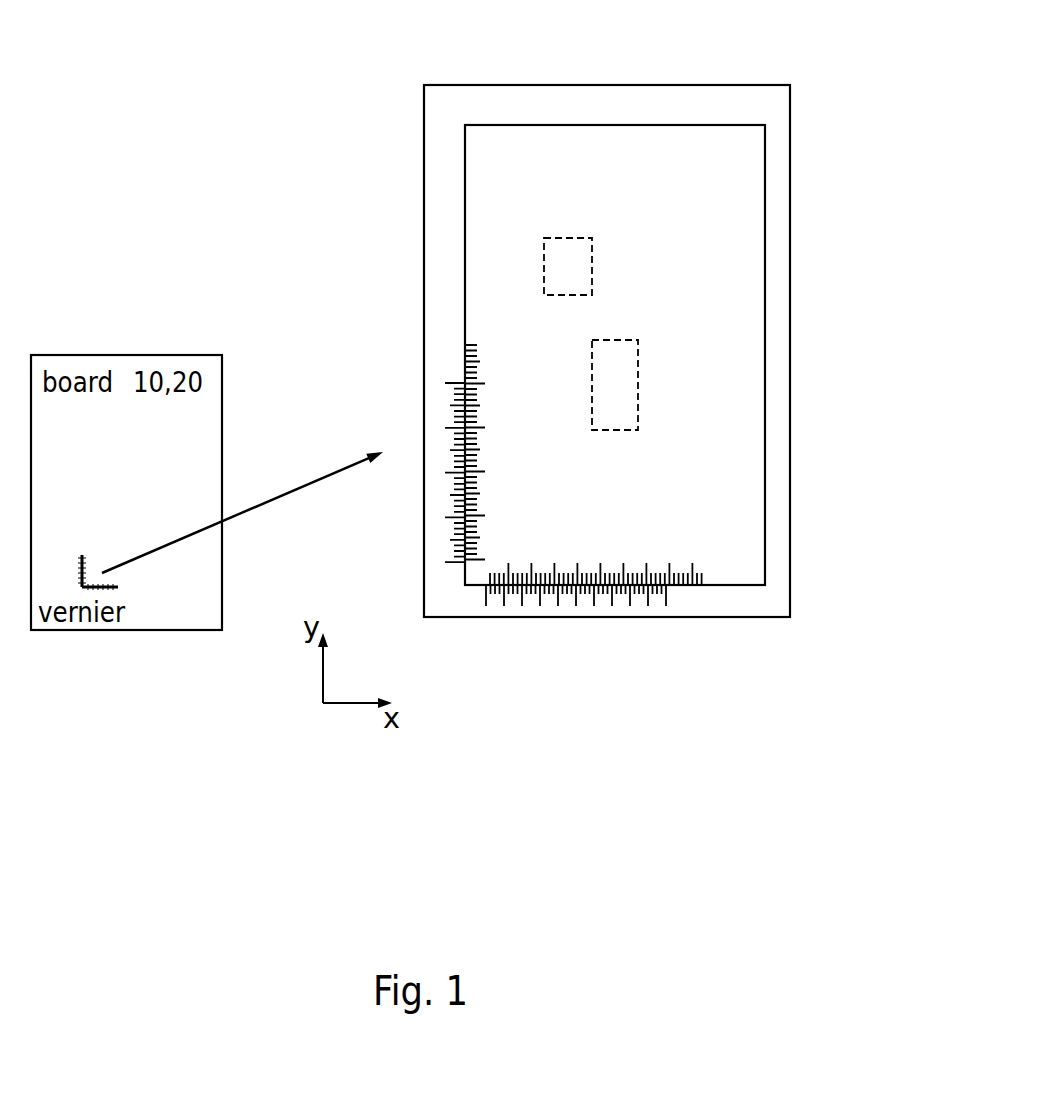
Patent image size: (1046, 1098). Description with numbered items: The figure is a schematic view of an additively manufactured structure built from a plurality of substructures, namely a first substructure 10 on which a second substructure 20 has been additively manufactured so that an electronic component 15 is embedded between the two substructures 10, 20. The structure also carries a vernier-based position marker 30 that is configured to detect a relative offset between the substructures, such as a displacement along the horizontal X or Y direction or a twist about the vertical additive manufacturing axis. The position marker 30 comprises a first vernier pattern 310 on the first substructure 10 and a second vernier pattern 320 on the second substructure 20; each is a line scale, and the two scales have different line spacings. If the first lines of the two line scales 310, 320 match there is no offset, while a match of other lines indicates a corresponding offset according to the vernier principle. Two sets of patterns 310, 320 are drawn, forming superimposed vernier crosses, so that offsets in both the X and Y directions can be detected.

The first substructure 10 is at (636, 85).
The second substructure 20 is at (537, 125).
The electronic component 15 is at (545, 258).
The vernier-based position marker 30 is at (722, 728).
The first vernier pattern 310 is at (465, 548).
The second vernier pattern 320 is at (465, 365).